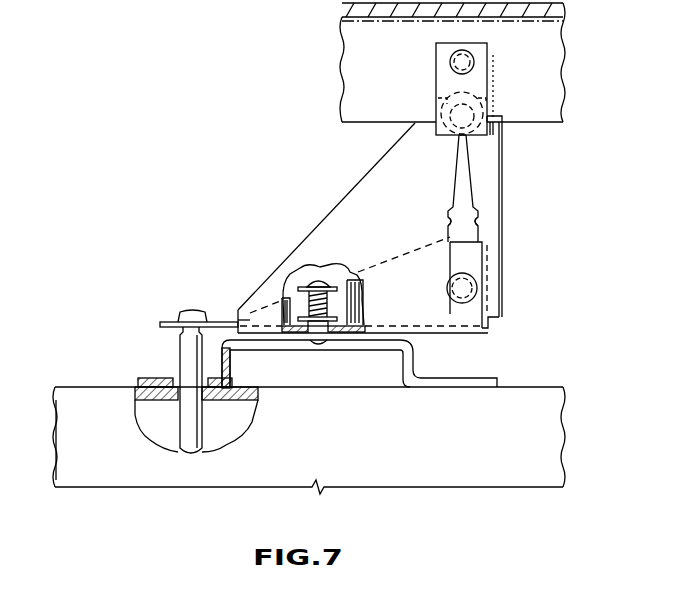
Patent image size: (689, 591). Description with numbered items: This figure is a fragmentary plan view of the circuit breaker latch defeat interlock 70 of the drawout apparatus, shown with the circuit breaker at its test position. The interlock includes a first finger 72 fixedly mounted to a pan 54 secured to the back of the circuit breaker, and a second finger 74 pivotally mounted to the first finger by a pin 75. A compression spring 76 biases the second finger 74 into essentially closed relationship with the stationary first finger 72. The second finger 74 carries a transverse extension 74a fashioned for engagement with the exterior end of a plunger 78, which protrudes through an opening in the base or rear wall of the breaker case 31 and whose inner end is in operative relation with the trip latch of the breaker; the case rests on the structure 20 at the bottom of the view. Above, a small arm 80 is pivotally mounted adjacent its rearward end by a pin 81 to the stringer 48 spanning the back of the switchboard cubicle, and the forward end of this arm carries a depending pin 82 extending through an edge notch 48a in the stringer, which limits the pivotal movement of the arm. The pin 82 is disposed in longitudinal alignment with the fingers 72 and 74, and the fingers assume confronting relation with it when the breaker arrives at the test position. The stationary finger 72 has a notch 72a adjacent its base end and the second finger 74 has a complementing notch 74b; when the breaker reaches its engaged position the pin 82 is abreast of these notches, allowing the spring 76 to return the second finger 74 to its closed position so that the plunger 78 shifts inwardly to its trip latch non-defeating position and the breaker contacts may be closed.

The base member 20 is at (567, 426).
The breaker case 31 is at (98, 447).
The stringer 48 is at (340, 55).
The edge notch 48a is at (440, 84).
The pan 54 is at (413, 362).
The interlock 70 is at (506, 250).
The first finger 72 is at (352, 193).
The notch 72a is at (455, 220).
The second finger 74 is at (502, 166).
The transverse extension 74a is at (168, 320).
The complementing notch 74b is at (478, 223).
The pin 75 is at (478, 288).
The compression spring 76 is at (302, 300).
The plunger 78 is at (182, 352).
The small arm 80 is at (487, 66).
The pin 81 is at (450, 60).
The depending pin 82 is at (478, 108).